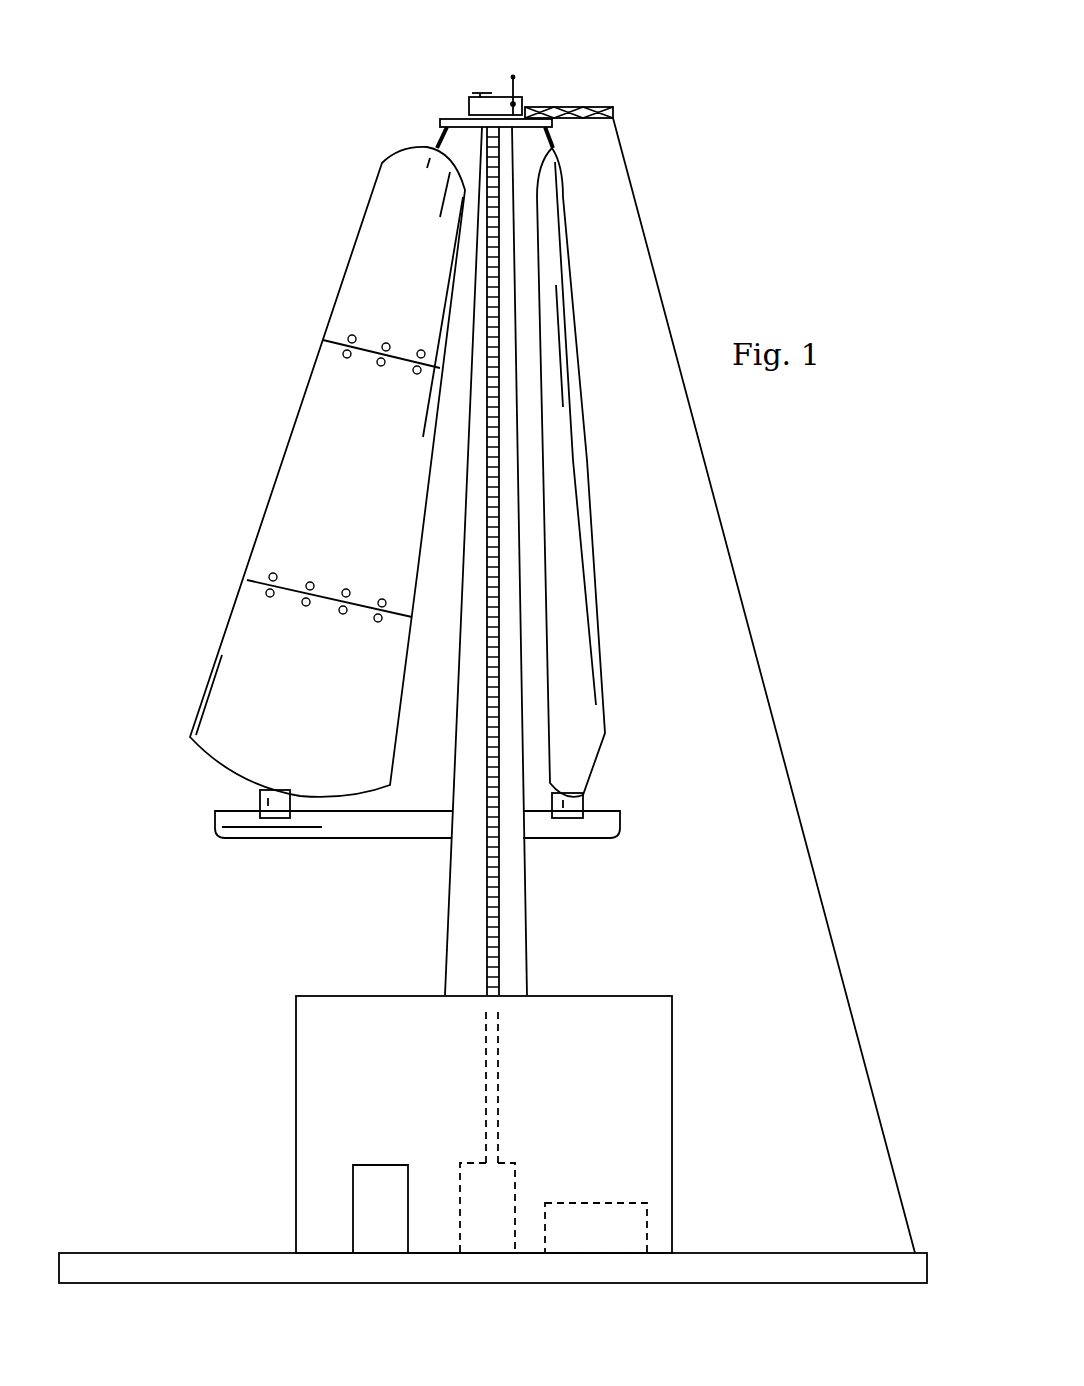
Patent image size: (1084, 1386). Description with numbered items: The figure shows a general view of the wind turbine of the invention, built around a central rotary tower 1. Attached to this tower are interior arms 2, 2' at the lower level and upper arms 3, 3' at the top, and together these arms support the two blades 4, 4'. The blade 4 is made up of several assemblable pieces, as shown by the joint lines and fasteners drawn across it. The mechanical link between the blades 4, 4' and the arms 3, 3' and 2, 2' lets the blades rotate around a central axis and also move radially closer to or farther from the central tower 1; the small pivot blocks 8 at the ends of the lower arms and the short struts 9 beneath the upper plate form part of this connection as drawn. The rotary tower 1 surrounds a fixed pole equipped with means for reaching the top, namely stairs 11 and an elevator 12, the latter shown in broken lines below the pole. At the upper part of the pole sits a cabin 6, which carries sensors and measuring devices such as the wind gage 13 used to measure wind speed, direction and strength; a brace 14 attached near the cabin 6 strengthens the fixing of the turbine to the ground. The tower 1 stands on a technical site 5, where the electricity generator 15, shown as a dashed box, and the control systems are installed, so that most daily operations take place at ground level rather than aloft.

The rotary tower 1 is at (525, 913).
The interior arm 2 is at (333, 861).
The interior arm 2' is at (593, 823).
The upper arm 3 is at (475, 96).
The upper arm 3' is at (569, 92).
The blade 4 is at (311, 472).
The blade 4' is at (588, 472).
The technical site 5 is at (628, 1118).
The cabin 6 is at (514, 104).
The pivot block 8 is at (258, 800).
The strut 9 is at (437, 148).
The stairs 11 is at (500, 892).
The elevator 12 is at (512, 1135).
The wind gage 13 is at (480, 93).
The brace 14 is at (720, 510).
The generator 15 is at (575, 1203).